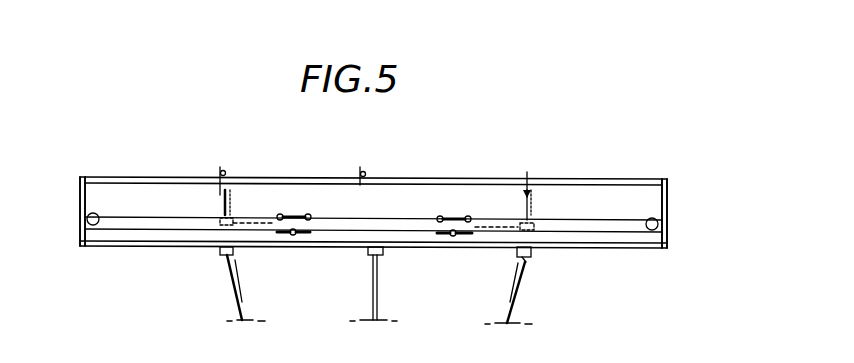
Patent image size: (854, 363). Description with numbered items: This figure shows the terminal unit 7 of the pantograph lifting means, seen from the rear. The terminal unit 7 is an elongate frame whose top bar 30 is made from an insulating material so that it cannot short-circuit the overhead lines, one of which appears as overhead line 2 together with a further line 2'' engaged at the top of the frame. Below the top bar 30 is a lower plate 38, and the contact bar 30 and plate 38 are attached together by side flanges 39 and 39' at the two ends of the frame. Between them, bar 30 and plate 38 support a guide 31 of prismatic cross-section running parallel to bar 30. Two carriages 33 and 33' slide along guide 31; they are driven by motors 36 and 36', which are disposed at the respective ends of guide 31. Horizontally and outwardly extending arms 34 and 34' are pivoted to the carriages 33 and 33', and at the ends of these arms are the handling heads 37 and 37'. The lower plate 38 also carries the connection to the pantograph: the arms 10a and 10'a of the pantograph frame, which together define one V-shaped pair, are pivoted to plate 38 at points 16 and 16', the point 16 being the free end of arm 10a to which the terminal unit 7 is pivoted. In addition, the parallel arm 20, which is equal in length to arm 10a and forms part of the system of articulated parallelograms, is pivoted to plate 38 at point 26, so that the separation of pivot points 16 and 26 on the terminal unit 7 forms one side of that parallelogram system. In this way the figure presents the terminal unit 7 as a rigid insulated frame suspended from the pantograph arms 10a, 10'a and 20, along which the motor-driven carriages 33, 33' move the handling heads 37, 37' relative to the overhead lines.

The terminal unit 7 is at (631, 150).
The top bar 30 is at (637, 176).
The lower plate 38 is at (642, 249).
The guide 31 is at (615, 226).
The side flange 39 is at (56, 198).
The side flange 39' is at (698, 213).
The motor 36 is at (108, 207).
The motor 36' is at (679, 201).
The overhead line 2 is at (234, 164).
The pin 2'' is at (360, 159).
The handling head 37 is at (196, 207).
The handling head 37' is at (553, 201).
The arm 34 is at (272, 208).
The arm 34' is at (477, 210).
The carriage 33 is at (314, 214).
The carriage 33' is at (443, 214).
The pivot point 16 is at (202, 263).
The pivot point 16' is at (553, 265).
The arm 10a is at (232, 289).
The arm 10'a is at (543, 293).
The pivot point 26 is at (380, 254).
The arm 20 is at (378, 305).